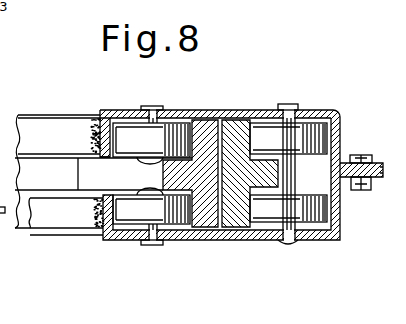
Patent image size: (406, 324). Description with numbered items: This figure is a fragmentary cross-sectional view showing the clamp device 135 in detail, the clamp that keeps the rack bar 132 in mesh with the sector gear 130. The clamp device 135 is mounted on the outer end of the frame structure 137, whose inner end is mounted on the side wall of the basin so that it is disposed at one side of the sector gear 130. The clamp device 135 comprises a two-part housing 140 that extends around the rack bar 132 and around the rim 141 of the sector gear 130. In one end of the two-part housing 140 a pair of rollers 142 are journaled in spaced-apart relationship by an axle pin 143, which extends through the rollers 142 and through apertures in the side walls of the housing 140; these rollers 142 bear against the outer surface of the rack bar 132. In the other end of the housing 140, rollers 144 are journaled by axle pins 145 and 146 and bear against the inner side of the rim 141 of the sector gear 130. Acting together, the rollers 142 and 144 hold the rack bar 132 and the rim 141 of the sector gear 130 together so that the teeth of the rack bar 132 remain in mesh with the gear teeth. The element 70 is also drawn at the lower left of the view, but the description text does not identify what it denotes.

The support frame 70 is at (0, 310).
The sector gear 130 is at (45, 182).
The rack bar 132 is at (236, 121).
The clamp device 135 is at (106, 111).
The frame structure 137 is at (55, 138).
The two-part housing 140 is at (256, 109).
The rim of the sector gear 141 is at (205, 221).
The rollers 142 is at (340, 113).
The axle pin 143 is at (291, 106).
The rollers 144 is at (130, 136).
The axle pin 145 is at (157, 112).
The axle pin 146 is at (157, 245).